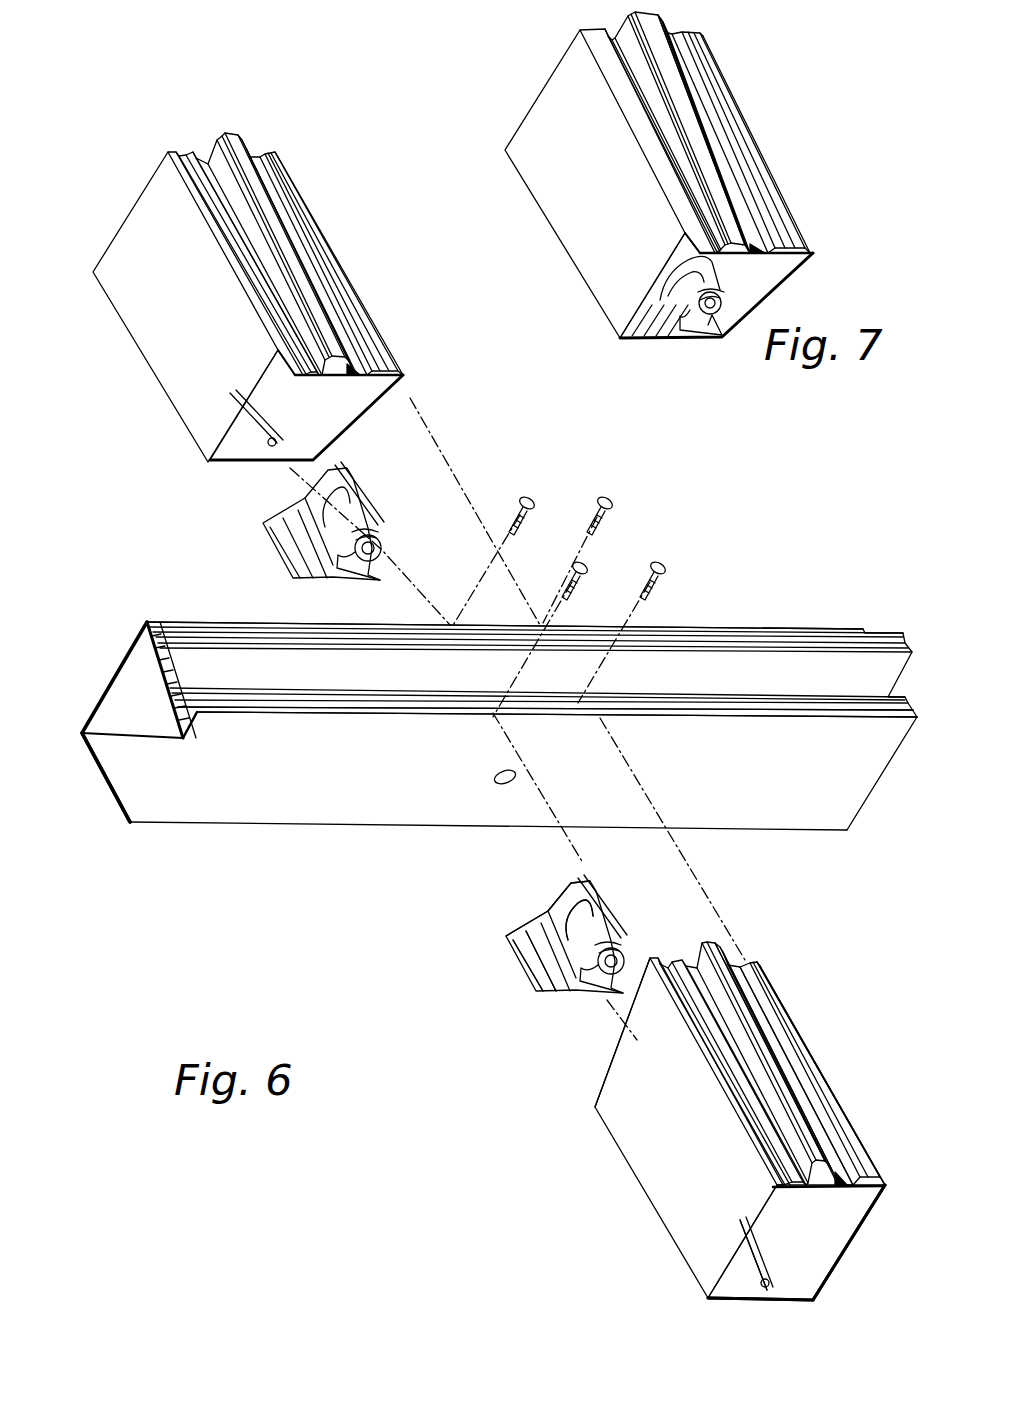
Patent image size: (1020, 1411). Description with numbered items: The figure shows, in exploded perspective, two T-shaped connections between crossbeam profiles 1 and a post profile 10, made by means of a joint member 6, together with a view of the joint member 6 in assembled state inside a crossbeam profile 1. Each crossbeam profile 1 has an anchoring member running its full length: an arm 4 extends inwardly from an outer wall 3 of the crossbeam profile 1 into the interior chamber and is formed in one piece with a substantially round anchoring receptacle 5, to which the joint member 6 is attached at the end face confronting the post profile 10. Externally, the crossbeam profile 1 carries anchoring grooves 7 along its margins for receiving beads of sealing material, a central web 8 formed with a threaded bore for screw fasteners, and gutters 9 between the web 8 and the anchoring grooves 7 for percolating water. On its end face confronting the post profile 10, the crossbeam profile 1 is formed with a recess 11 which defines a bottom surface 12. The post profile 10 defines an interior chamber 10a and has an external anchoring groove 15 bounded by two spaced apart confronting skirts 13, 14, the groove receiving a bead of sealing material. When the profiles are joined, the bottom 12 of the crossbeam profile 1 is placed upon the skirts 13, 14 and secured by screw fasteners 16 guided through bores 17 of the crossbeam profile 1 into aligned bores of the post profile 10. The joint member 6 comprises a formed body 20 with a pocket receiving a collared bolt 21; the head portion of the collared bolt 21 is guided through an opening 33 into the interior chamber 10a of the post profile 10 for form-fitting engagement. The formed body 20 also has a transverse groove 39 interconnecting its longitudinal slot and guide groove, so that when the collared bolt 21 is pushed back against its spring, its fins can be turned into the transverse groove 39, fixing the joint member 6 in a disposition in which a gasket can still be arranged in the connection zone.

In FIG. 6, the crossbeam profile 1 is at (150, 385).
In FIG. 7, the crossbeam profile 1 is at (526, 208).
In FIG. 6, the outer wall 3 is at (735, 1300).
In FIG. 6, the arm 4 is at (760, 1290).
In FIG. 6, the anchoring receptacle 5 is at (795, 1282).
In FIG. 6, the joint member 6 is at (374, 492).
In FIG. 6, the anchoring grooves 7 is at (800, 1068).
In FIG. 7, the anchoring grooves 7 is at (680, 165).
In FIG. 6, the web 8 is at (817, 1113).
In FIG. 6, the gutters 9 is at (845, 1177).
In FIG. 6, the post profile 10 is at (240, 838).
In FIG. 6, the interior chamber 10a is at (118, 757).
In FIG. 6, the recess 11 is at (610, 1053).
In FIG. 6, the bottom surface 12 is at (398, 383).
In FIG. 7, the bottom surface 12 is at (778, 257).
In FIG. 6, the skirt 13 is at (222, 720).
In FIG. 6, the skirt 14 is at (227, 630).
In FIG. 6, the external anchoring groove 15 is at (317, 705).
In FIG. 6, the screw fasteners 16 is at (664, 568).
In FIG. 6, the bores 17 is at (745, 968).
In FIG. 6, the formed body 20 is at (542, 982).
In FIG. 6, the collared bolt 21 is at (562, 880).
In FIG. 6, the opening 33 is at (497, 784).
In FIG. 6, the transverse groove 39 is at (530, 915).